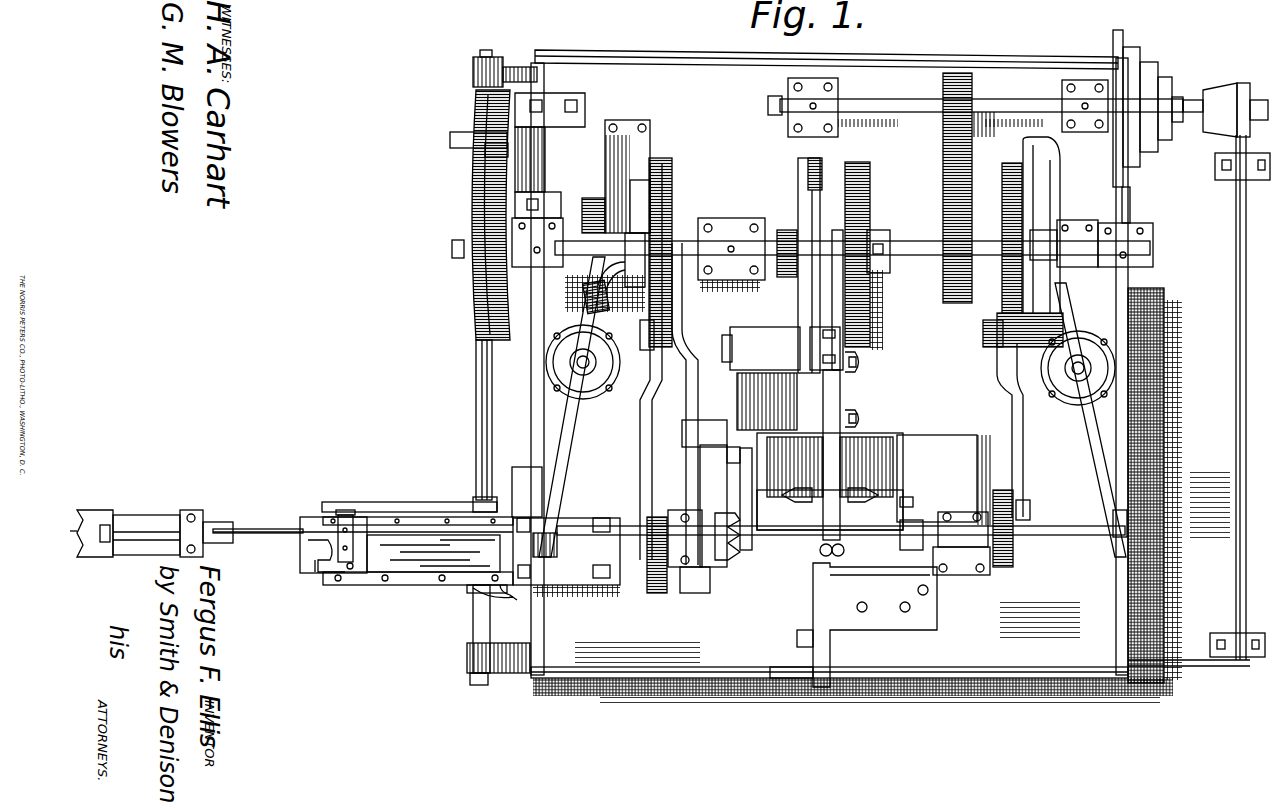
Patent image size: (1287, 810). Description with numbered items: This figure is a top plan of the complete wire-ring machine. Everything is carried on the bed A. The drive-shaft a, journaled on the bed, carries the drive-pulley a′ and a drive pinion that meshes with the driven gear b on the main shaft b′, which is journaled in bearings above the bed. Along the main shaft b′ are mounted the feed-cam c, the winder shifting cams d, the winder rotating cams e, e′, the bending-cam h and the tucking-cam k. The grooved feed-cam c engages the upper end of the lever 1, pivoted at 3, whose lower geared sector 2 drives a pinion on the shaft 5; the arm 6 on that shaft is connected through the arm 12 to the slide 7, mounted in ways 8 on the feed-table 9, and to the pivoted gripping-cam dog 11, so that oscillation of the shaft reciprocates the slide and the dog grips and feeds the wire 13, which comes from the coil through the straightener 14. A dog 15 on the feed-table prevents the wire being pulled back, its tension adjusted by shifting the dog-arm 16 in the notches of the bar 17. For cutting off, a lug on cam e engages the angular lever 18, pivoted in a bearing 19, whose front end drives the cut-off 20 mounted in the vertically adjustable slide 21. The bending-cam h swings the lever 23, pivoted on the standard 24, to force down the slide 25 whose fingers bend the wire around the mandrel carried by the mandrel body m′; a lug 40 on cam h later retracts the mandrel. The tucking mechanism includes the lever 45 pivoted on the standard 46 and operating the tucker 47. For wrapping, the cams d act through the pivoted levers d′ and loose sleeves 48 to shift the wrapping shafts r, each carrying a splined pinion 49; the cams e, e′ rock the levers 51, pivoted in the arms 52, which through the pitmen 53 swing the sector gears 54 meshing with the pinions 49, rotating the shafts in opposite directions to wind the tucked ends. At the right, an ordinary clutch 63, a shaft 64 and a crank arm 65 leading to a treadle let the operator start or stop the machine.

The bed A is at (871, 377).
The drive-shaft a is at (975, 104).
The drive-pulley a′ is at (1148, 126).
The driven gear b is at (852, 207).
The main shaft b′ is at (878, 248).
The feed-cam c is at (493, 195).
The winder shifting cams d is at (805, 197).
The pivoted levers d′ is at (832, 407).
The winder rotating cam e is at (669, 252).
The winder rotating cam e′ is at (1001, 238).
The bending-cam h is at (747, 235).
The tucking-cam k is at (865, 256).
The mandrel body m′ is at (848, 430).
The wrapping shaft r is at (841, 515).
The lever 1 is at (485, 152).
The geared sector 2 is at (466, 141).
The pivot 3 is at (515, 110).
The shaft 5 is at (473, 420).
The arm 6 is at (395, 508).
The slide 7 is at (303, 566).
The ways 8 is at (416, 542).
The feed-table 9 is at (433, 553).
The gripping-cam dog 11 is at (308, 549).
The arm 12 is at (346, 515).
The wire 13 is at (258, 521).
The straightener 14 is at (151, 523).
The dog 15 is at (470, 590).
The dog-arm 16 is at (473, 605).
The bar 17 is at (510, 596).
The angular lever 18 is at (760, 556).
The bearing 19 is at (717, 493).
The cut-off 20 is at (717, 551).
The slide 21 is at (723, 524).
The lever 23 is at (841, 375).
The standard 24 is at (781, 378).
The slide 25 is at (844, 552).
The lug 40 is at (816, 261).
The lever 45 is at (797, 637).
The standard 46 is at (875, 625).
The tucker 47 is at (805, 667).
The sleeve 48 is at (568, 530).
The pinion 49 is at (836, 548).
The lever 51 is at (672, 190).
The arm 52 is at (825, 233).
The pitman 53 is at (837, 361).
The sector gear 54 is at (837, 541).
The clutch 63 is at (1226, 119).
The shaft 64 is at (1256, 397).
The crank arm 65 is at (1196, 649).